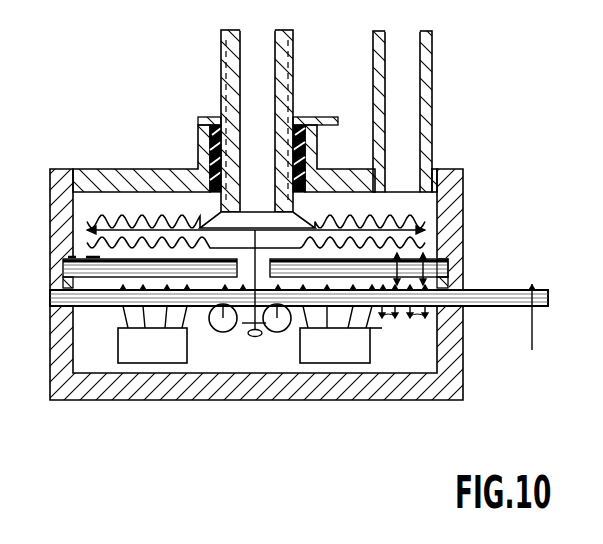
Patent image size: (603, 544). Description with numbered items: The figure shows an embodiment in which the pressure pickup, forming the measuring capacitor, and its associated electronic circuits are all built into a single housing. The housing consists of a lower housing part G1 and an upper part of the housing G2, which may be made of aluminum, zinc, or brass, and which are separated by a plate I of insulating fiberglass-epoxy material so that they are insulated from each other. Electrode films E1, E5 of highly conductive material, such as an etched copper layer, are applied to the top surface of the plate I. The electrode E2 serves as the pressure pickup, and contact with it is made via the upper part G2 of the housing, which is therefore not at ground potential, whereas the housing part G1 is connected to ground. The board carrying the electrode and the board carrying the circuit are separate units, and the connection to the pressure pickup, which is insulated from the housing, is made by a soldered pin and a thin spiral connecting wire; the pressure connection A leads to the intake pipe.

The housing part G1 is at (145, 386).
The upper part of the housing G2 is at (144, 177).
The electrode film E1 is at (100, 262).
The electrode E2 is at (423, 220).
The electrode film E5 is at (435, 268).
The plate of insulating material I is at (448, 273).
The armature shaft A is at (199, 308).